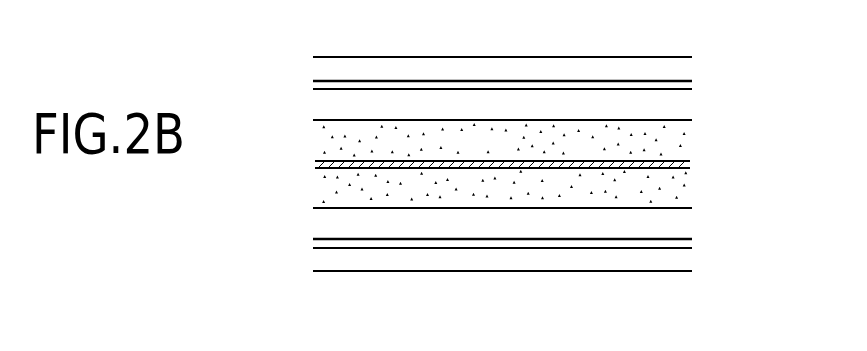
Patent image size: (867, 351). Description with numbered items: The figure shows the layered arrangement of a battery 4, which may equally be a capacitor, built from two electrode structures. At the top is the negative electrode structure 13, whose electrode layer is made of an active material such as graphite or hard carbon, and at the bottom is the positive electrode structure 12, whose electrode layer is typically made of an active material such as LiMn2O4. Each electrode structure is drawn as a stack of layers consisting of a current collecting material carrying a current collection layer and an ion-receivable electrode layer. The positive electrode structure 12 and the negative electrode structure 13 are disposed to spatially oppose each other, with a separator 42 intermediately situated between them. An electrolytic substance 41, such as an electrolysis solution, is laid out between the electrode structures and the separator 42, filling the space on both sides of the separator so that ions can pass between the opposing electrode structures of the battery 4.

The negative electrode structure 13 is at (472, 64).
The positive electrode structure 12 is at (472, 269).
The battery 4 is at (498, 165).
The electrolytic substance 41 is at (333, 188).
The separator 42 is at (529, 204).